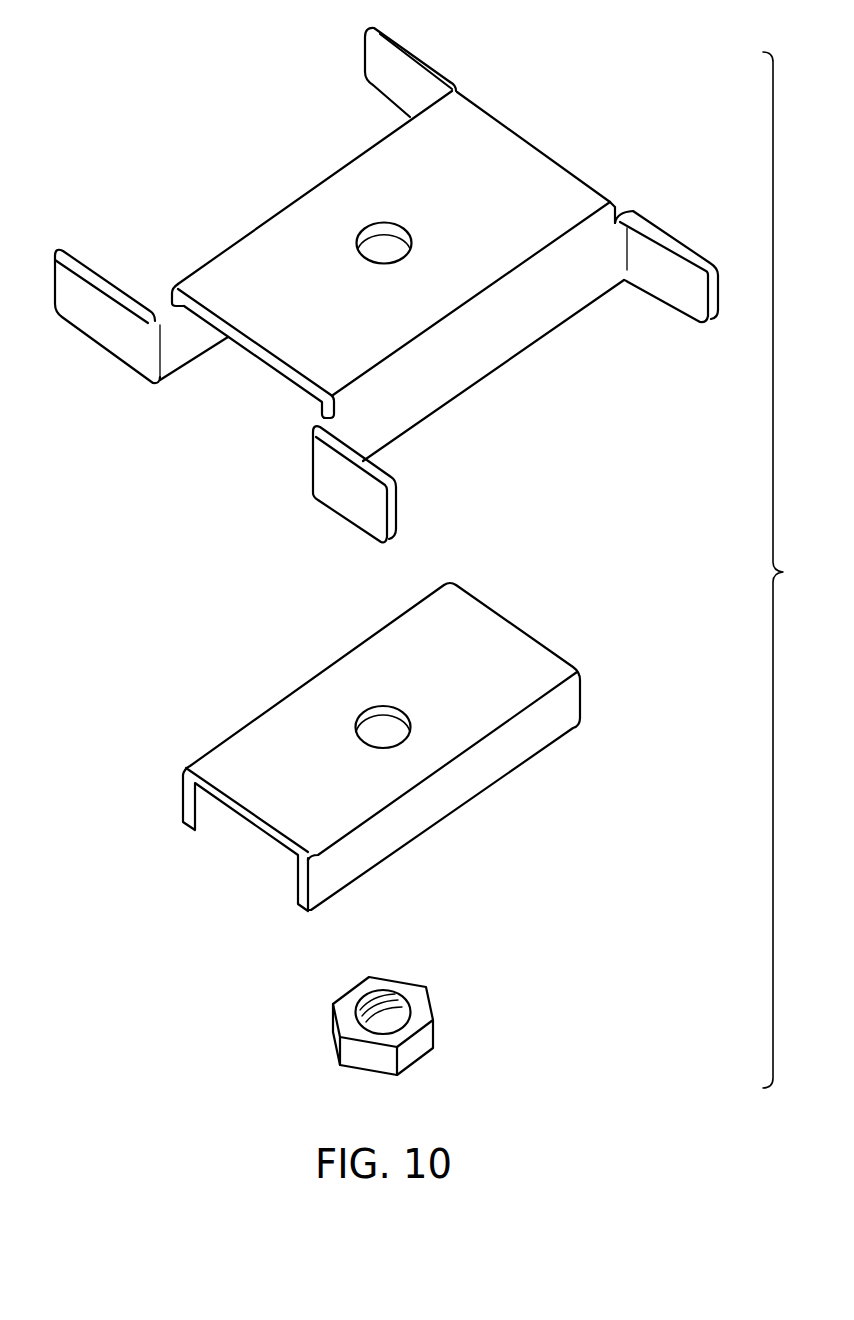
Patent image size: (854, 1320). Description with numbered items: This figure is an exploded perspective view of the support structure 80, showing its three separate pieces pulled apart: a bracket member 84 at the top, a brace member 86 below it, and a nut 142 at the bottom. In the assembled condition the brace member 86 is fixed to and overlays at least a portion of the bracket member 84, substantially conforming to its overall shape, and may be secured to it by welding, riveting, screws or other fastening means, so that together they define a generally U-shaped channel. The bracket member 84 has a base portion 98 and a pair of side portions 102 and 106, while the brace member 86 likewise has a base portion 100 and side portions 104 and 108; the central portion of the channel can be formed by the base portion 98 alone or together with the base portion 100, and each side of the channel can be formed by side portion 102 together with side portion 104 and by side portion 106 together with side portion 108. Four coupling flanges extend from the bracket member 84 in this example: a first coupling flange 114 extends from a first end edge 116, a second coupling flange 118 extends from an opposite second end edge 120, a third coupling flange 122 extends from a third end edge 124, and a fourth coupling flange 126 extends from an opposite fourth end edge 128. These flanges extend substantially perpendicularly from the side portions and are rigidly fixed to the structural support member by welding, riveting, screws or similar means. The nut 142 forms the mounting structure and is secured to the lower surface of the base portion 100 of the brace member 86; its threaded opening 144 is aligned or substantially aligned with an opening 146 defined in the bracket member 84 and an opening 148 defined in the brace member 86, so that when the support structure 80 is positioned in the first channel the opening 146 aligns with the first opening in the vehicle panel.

The support structure 80 is at (791, 570).
The bracket member 84 is at (386, 295).
The brace member 86 is at (364, 732).
The base portion of the bracket member 98 is at (394, 243).
The base portion of the brace member 100 is at (381, 721).
The side portion of the bracket member 102 is at (488, 333).
The side portion of the brace member 104 is at (515, 740).
The side portion of the bracket member 106 is at (187, 340).
The side portion of the brace member 108 is at (203, 807).
The first coupling flange 114 is at (673, 278).
The first end edge 116 is at (631, 214).
The second coupling flange 118 is at (387, 73).
The second end edge 120 is at (456, 88).
The third coupling flange 122 is at (352, 498).
The third end edge 124 is at (322, 420).
The fourth coupling flange 126 is at (102, 319).
The fourth end edge 128 is at (162, 311).
The nut 142 is at (427, 1003).
The threaded opening 144 is at (390, 1005).
The opening defined in the bracket member 146 is at (380, 232).
The opening defined in the brace member 148 is at (380, 712).